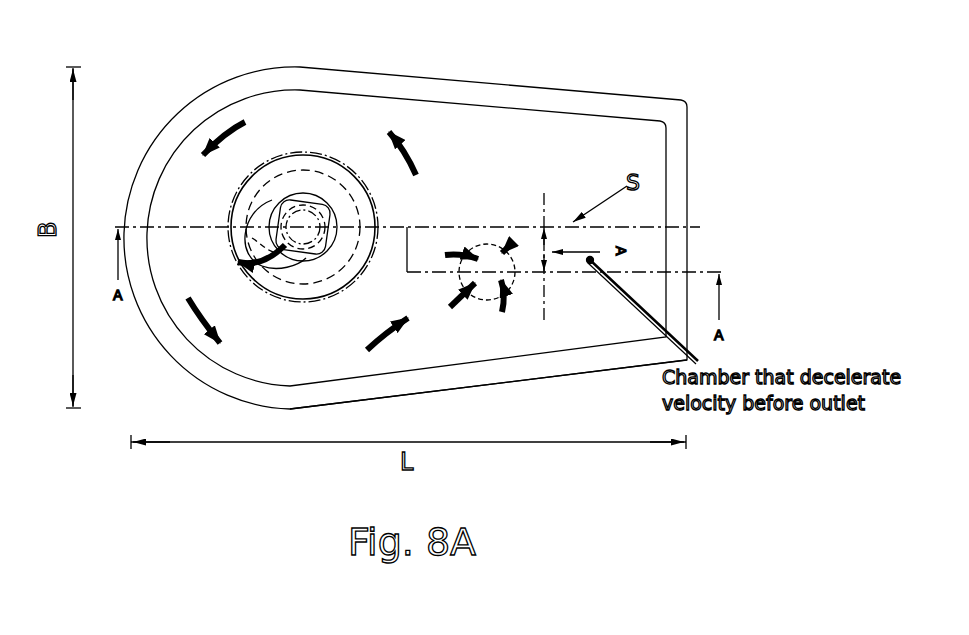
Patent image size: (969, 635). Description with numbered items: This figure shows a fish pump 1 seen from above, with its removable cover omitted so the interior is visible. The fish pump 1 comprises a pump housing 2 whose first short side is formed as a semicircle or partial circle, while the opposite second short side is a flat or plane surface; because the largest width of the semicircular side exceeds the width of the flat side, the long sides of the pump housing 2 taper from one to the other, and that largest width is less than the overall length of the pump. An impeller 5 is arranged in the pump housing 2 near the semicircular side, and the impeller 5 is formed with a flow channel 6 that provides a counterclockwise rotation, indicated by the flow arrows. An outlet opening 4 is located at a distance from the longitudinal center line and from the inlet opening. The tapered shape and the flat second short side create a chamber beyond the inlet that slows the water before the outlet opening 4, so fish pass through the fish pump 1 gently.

The fish pump 1 is at (500, 47).
The pump housing 2 is at (510, 373).
The outlet opening 4 is at (492, 248).
The impeller 5 is at (279, 168).
The flow channel 6 is at (281, 275).